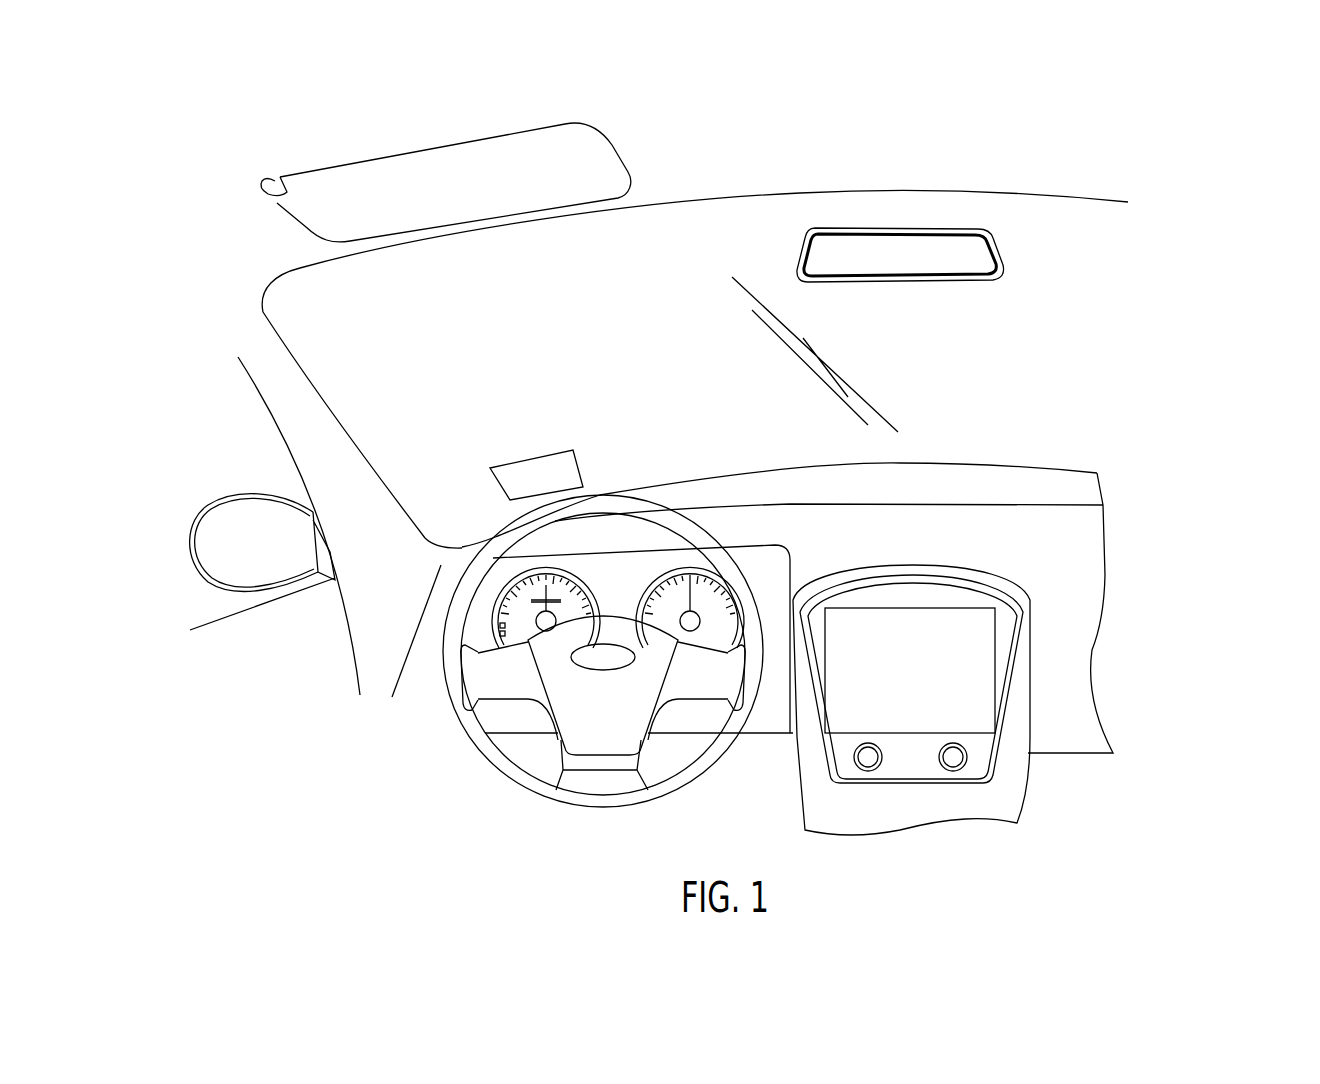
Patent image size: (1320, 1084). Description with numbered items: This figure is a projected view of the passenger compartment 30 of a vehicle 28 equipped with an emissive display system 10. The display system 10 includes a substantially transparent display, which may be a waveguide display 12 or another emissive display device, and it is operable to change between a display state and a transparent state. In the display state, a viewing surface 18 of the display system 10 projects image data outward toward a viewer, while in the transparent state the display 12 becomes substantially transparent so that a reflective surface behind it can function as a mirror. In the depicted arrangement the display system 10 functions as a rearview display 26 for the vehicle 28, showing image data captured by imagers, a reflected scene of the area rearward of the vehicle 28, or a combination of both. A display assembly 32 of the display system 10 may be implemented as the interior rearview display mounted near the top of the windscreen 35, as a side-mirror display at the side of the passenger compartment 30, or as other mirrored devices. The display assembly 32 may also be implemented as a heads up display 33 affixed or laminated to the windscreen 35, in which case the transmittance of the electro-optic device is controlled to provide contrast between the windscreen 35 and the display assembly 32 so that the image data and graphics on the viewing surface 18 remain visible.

The emissive display system 10 is at (808, 150).
The waveguide display 12 is at (974, 247).
The viewing surface 18 is at (915, 268).
The rearview display 26 is at (830, 246).
The vehicle 28 is at (1198, 113).
The passenger compartment 30 is at (1140, 506).
The display assembly 32 is at (1003, 264).
The heads up display 33 is at (512, 468).
The windscreen 35 is at (306, 292).